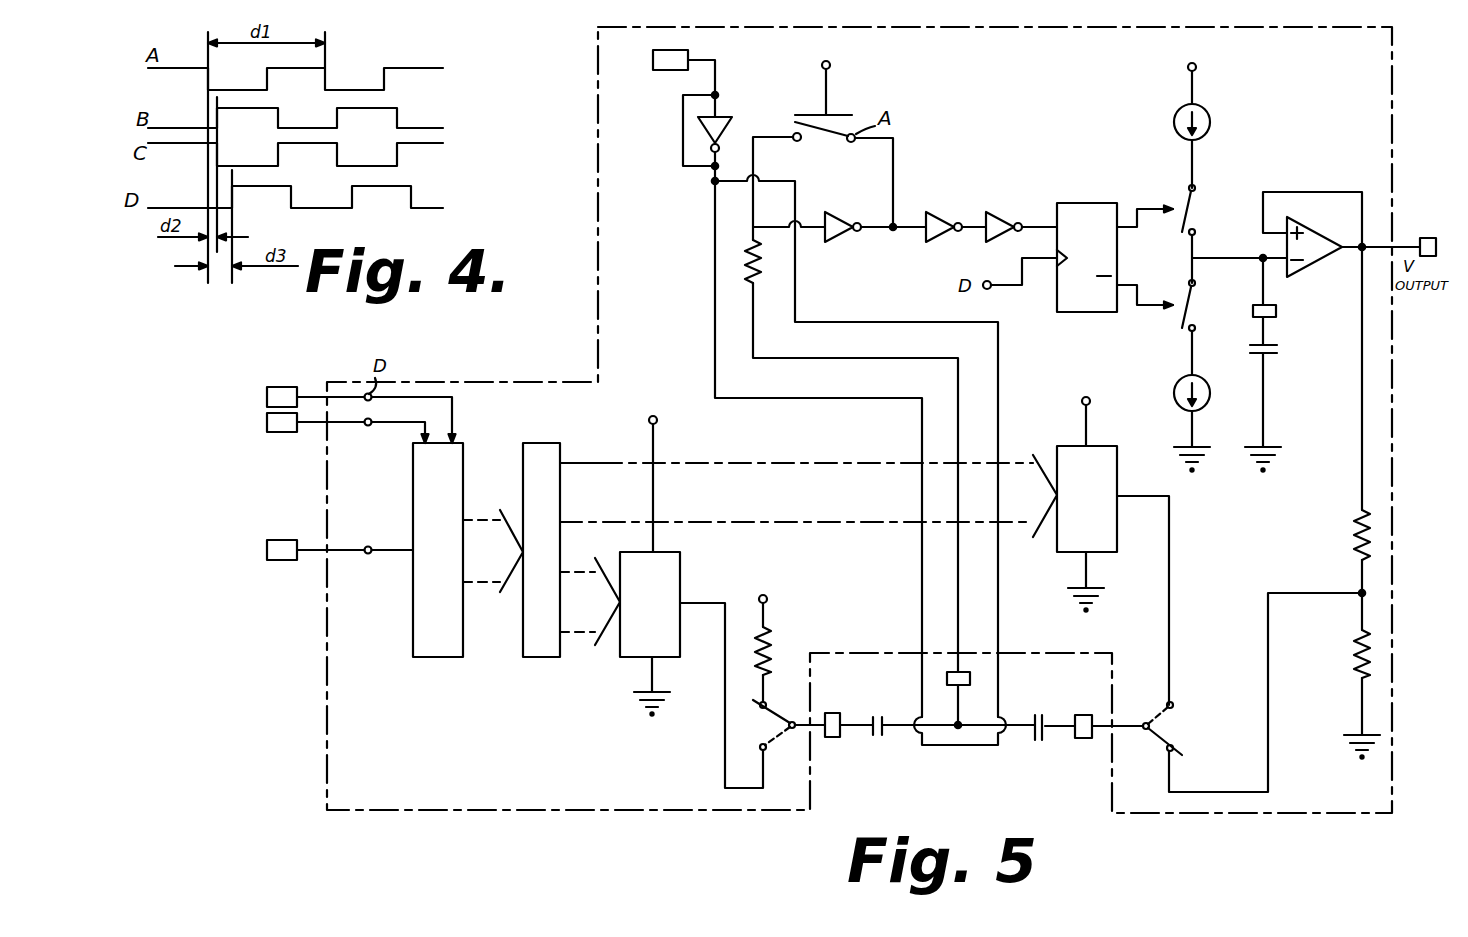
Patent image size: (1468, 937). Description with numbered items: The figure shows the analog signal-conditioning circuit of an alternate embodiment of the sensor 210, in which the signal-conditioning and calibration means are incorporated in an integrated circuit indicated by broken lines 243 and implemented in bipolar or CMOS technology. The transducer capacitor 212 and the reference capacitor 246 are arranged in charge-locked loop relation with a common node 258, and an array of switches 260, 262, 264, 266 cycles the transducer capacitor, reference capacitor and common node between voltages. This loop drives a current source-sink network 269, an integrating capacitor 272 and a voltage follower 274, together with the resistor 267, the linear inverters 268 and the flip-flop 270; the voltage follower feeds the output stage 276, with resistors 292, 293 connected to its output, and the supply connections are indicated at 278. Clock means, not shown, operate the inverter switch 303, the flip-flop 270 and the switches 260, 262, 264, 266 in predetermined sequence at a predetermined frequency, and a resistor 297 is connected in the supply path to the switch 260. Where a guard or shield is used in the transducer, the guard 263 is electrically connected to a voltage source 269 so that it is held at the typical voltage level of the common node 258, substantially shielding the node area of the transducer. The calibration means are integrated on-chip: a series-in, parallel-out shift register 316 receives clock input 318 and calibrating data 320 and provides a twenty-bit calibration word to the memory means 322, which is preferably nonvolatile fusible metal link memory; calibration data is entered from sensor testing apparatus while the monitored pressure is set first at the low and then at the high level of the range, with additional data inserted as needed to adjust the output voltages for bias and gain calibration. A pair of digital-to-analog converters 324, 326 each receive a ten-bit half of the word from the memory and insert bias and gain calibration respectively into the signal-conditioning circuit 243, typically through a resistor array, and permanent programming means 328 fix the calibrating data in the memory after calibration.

The sensor 210 is at (1408, 78).
The transducer capacitor 212 is at (1025, 740).
The integrated circuit 243 is at (857, 27).
The reference capacitor 246 is at (868, 740).
The common node 258 is at (958, 728).
The switch 260 is at (767, 712).
The switch 262 is at (1167, 750).
The guard or shield 263 is at (715, 252).
The switch 264 is at (762, 746).
The switch 266 is at (1172, 703).
The resistor 267 is at (762, 266).
The linear inverters 268 is at (878, 210).
The current source-sink network 269 is at (728, 126).
The flip-flop 270 is at (1075, 206).
The integrating capacitor 272 is at (1274, 348).
The voltage follower 274 is at (1318, 258).
The output amplifier stage 276 is at (1349, 212).
The supply voltage terminal 278 is at (1196, 67).
The resistor 292 is at (1357, 527).
The resistor 293 is at (1358, 645).
The resistor 297 is at (771, 651).
The inverter switch 303 is at (833, 138).
The shift register 316 is at (443, 659).
The clock input 318 is at (455, 418).
The calibrating data input 320 is at (409, 430).
The memory means 322 is at (537, 660).
The digital-to-analog converter 324 is at (632, 660).
The digital-to-analog converter 326 is at (1102, 529).
The permanent programming means 328 is at (390, 556).